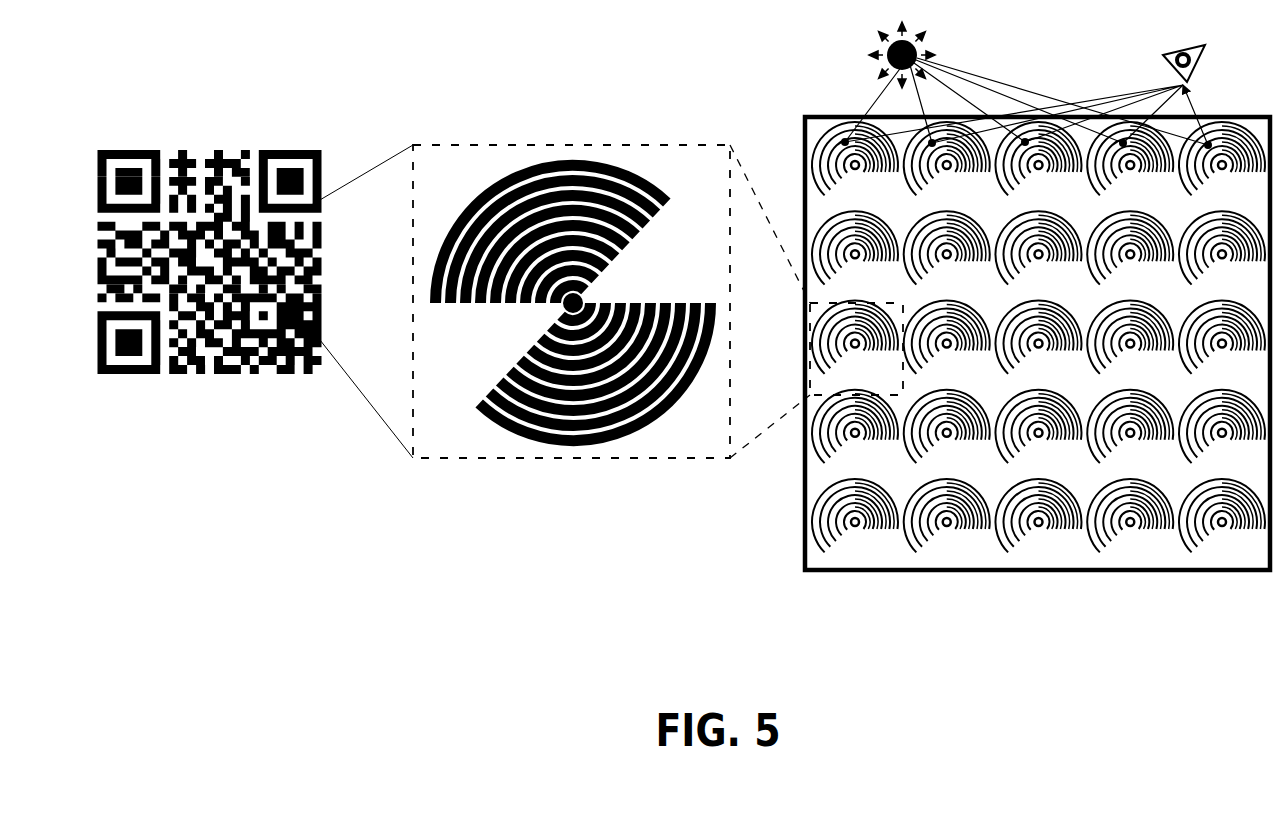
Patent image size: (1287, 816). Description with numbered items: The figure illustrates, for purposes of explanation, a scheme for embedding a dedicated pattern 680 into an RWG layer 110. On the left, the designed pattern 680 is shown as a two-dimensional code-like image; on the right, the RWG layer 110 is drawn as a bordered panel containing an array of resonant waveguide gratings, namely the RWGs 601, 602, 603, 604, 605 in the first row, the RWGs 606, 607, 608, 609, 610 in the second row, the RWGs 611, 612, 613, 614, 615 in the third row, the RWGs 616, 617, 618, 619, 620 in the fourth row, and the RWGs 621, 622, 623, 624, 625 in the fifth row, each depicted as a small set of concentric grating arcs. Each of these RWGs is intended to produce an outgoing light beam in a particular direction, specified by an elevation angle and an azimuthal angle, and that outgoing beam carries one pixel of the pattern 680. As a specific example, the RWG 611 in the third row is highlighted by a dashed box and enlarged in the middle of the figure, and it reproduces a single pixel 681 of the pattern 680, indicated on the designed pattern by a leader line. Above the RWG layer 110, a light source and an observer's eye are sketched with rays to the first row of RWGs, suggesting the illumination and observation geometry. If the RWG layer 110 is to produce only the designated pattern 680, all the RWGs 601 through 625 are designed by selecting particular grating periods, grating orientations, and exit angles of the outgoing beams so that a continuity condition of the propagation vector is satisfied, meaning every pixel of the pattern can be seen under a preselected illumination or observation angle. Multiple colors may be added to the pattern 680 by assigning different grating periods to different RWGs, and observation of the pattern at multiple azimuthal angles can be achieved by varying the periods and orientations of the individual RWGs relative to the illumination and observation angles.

The RWG layer 110 is at (1190, 606).
The dedicated pattern 680 is at (266, 374).
The pixel 681 is at (255, 223).
The RWG 611 is at (488, 460).
The RWG 601 is at (855, 162).
The RWG 602 is at (947, 162).
The RWG 603 is at (1038, 162).
The RWG 604 is at (1130, 162).
The RWG 605 is at (1222, 162).
The RWG 606 is at (855, 252).
The RWG 607 is at (947, 252).
The RWG 608 is at (1038, 252).
The RWG 609 is at (1130, 252).
The RWG 610 is at (1222, 252).
The RWG 612 is at (947, 341).
The RWG 613 is at (1038, 341).
The RWG 614 is at (1130, 341).
The RWG 615 is at (1222, 341).
The RWG 616 is at (855, 430).
The RWG 617 is at (947, 430).
The RWG 618 is at (1038, 430).
The RWG 619 is at (1130, 430).
The RWG 620 is at (1222, 430).
The RWG 621 is at (855, 519).
The RWG 622 is at (947, 519).
The RWG 623 is at (1038, 519).
The RWG 624 is at (1130, 519).
The RWG 625 is at (1222, 519).